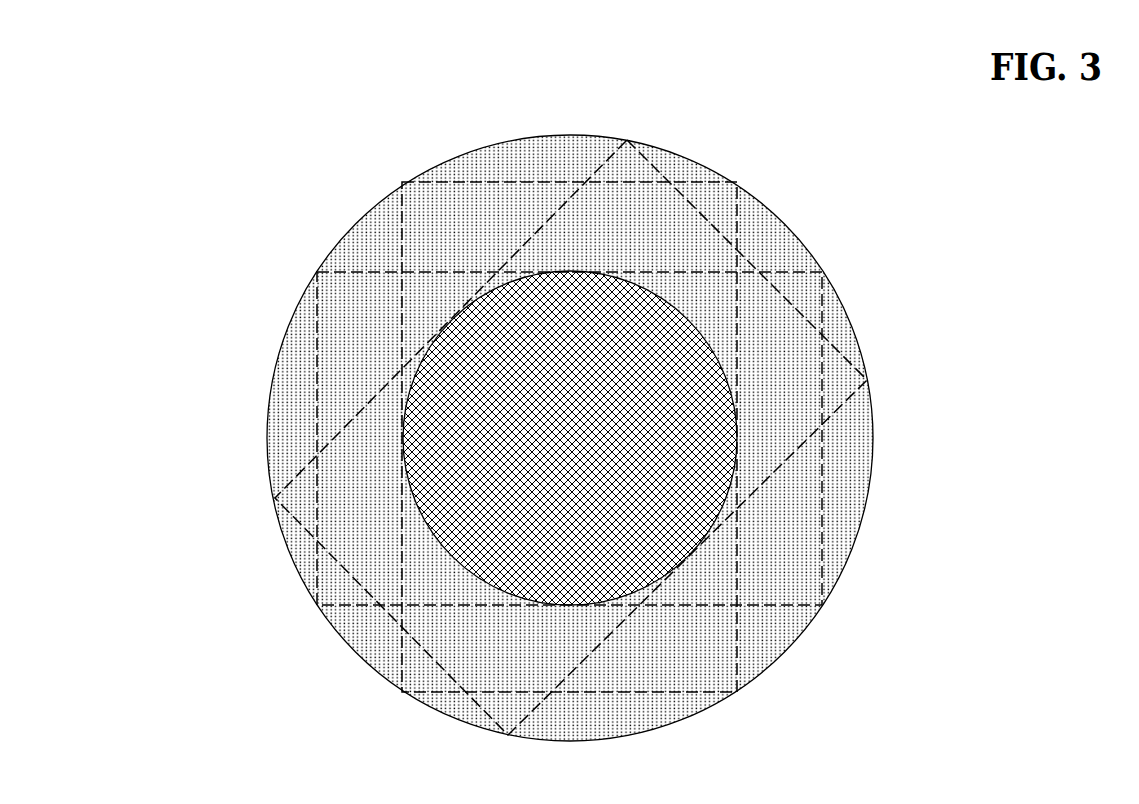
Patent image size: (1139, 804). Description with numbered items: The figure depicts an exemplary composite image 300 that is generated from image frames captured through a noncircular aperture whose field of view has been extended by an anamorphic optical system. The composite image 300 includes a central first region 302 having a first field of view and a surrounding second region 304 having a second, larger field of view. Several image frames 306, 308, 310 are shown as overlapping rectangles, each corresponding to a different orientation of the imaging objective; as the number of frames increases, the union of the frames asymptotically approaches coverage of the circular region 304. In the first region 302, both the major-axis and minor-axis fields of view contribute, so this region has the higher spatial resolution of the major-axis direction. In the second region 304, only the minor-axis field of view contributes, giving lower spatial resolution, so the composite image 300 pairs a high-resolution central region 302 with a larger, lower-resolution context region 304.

The composite image 300 is at (798, 104).
The first region 302 is at (687, 556).
The second region 304 is at (445, 158).
The image frame 306 is at (568, 183).
The image frame 308 is at (757, 263).
The image frame 310 is at (815, 442).